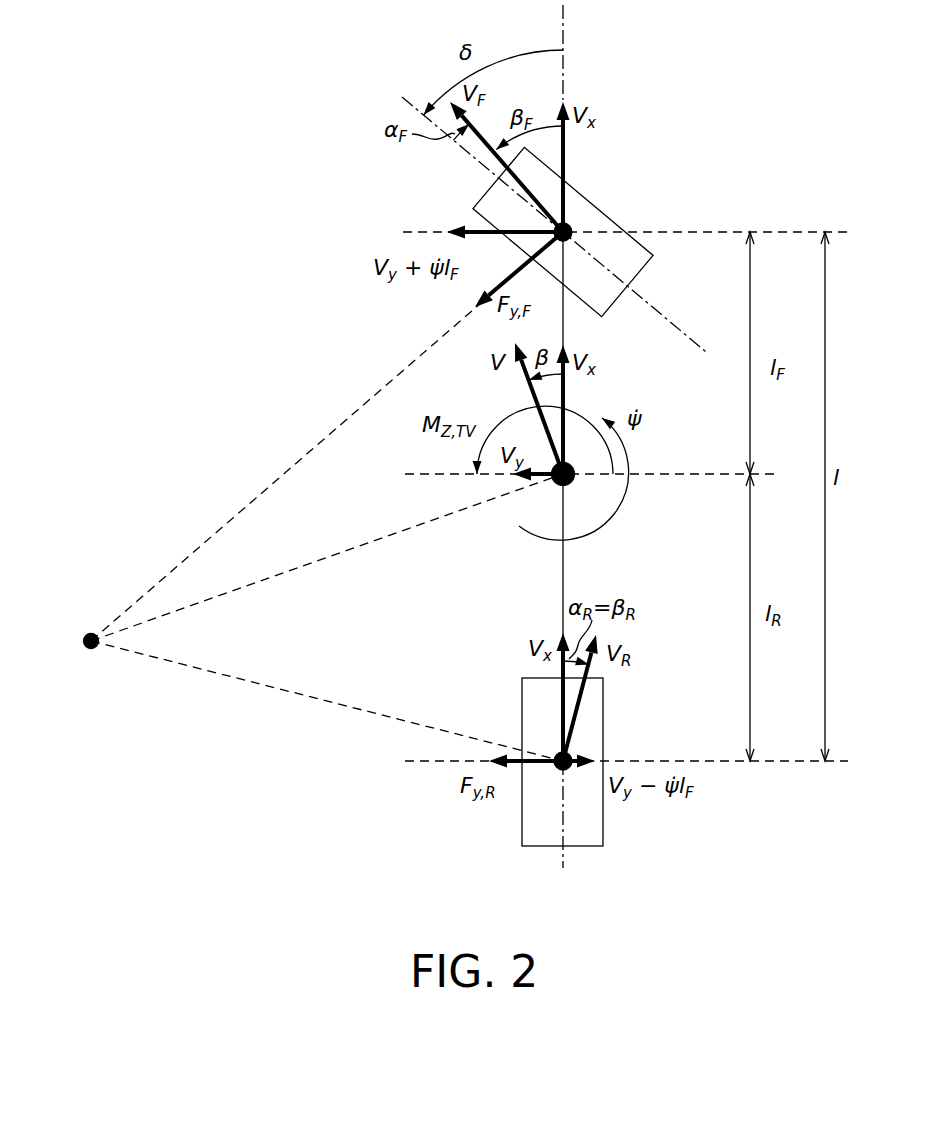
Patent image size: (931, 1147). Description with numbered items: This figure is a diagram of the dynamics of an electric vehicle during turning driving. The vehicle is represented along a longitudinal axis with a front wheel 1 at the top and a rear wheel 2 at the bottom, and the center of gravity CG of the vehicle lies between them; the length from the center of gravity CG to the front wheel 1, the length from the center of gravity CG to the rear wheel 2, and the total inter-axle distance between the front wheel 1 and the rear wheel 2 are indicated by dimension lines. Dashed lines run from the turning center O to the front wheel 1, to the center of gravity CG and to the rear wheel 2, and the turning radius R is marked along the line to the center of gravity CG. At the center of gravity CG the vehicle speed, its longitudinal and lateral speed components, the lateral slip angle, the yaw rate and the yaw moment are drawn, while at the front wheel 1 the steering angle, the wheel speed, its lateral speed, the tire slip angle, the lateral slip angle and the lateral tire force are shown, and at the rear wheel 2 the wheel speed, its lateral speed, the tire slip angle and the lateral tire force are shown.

The front wheel 1 is at (588, 212).
The rear wheel 2 is at (595, 730).
The center of gravity CG is at (577, 486).
The turning center O is at (87, 657).
The turning radius R is at (327, 496).